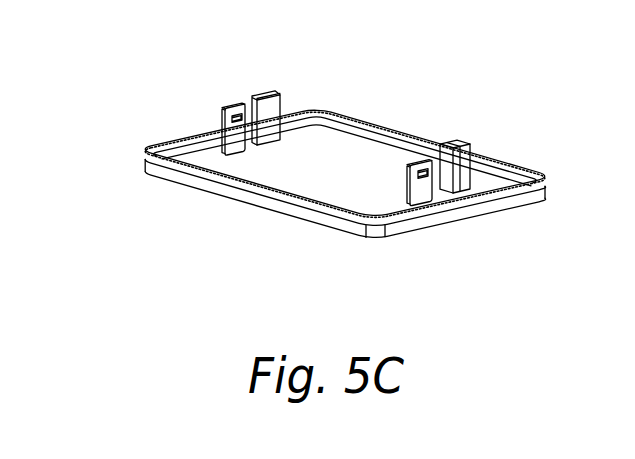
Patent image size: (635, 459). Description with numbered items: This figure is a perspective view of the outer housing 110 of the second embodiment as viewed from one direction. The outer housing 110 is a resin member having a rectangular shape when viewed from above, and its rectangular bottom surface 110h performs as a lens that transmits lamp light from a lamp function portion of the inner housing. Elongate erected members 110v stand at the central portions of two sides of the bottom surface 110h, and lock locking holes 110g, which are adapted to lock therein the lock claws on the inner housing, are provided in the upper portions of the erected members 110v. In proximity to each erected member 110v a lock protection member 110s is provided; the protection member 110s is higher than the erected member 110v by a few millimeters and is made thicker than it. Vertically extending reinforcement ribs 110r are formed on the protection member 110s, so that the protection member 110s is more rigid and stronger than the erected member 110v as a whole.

The outer housing 110 is at (378, 126).
The rectangular bottom surface 110h is at (318, 182).
The erected member 110v is at (187, 97).
The lock locking hole 110g is at (235, 107).
The lock protection member 110s is at (267, 95).
The reinforcement rib 110r is at (470, 150).